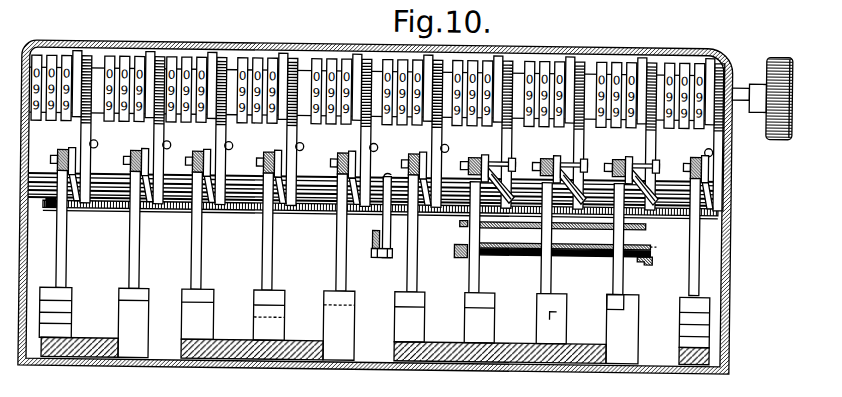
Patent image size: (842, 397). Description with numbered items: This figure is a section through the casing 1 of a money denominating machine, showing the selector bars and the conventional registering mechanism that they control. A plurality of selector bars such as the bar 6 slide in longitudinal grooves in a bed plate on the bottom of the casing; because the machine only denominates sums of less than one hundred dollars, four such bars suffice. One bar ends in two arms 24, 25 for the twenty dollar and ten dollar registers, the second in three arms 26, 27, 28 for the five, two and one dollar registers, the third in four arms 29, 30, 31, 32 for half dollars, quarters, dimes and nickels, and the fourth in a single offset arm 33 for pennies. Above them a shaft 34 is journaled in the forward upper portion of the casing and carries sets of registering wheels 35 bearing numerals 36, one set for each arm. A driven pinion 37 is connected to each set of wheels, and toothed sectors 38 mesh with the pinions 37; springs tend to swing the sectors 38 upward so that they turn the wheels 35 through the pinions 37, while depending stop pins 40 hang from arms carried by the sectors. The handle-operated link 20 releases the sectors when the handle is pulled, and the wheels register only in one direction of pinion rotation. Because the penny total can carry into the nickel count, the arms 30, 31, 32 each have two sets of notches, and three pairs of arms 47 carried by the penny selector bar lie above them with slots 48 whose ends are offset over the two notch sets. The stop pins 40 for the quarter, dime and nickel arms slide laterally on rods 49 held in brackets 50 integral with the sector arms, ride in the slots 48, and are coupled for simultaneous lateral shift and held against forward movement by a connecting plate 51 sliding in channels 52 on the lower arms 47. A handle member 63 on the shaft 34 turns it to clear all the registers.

The casing 1 is at (603, 46).
The selector bar 6 is at (117, 357).
The link 20 is at (371, 246).
The arm 24 is at (75, 315).
The arm 25 is at (135, 324).
The arm 26 is at (203, 323).
The arm 27 is at (280, 327).
The arm 28 is at (348, 319).
The arm 29 is at (408, 326).
The arm 30 is at (482, 324).
The arm 31 is at (548, 323).
The arm 32 is at (622, 321).
The offset arm 33 is at (693, 305).
The shaft 34 is at (735, 80).
The registering wheels 35 is at (132, 53).
The numerals 36 is at (68, 55).
The driven pinion 37 is at (507, 56).
The toothed sector 38 is at (227, 132).
The stop pin 40 is at (137, 254).
The arms 47 is at (498, 240).
The slot 48 is at (387, 236).
The rod 49 is at (493, 157).
The bracket 50 is at (463, 156).
The connecting plate 51 is at (502, 250).
The channels 52 is at (462, 253).
The handle member 63 is at (788, 108).